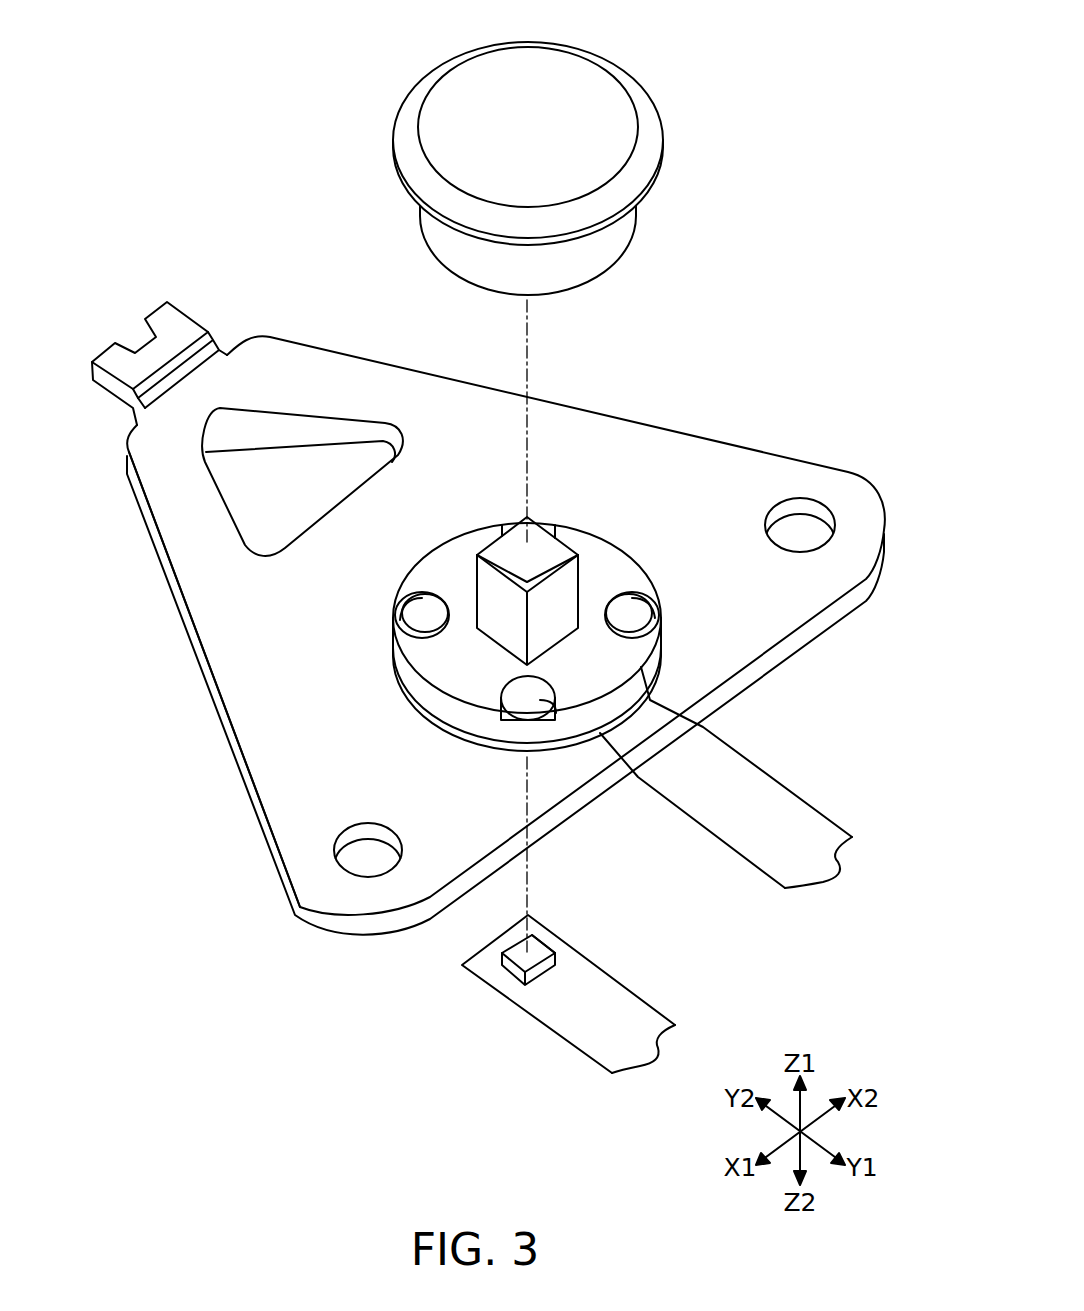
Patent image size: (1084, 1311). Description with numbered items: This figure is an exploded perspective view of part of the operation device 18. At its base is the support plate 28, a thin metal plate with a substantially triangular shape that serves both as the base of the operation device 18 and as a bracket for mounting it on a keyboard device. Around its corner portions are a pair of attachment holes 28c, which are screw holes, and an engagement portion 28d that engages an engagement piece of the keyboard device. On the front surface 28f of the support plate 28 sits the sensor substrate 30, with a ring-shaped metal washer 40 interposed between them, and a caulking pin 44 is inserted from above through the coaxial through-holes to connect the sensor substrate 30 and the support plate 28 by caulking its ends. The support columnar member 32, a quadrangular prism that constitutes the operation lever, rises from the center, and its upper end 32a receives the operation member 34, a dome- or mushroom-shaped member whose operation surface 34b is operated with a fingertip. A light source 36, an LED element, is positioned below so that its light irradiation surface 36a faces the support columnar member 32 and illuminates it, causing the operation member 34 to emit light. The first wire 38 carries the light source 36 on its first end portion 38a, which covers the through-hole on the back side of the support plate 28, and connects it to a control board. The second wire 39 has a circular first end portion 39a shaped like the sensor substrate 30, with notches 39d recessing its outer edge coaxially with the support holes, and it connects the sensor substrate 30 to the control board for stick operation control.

The operation device 18 is at (172, 34).
The support plate 28 is at (479, 597).
The attachment hole 28c is at (797, 527).
The engagement portion 28d is at (150, 358).
The front surface 28f is at (273, 747).
The sensor substrate 30 is at (503, 604).
The support columnar member 32 is at (627, 505).
The shaft tip 32a is at (580, 582).
The operation member 34 is at (476, 147).
The operation surface 34b is at (588, 102).
The light source 36 is at (519, 957).
The light irradiation surface 36a is at (505, 950).
The first wire 38 is at (584, 994).
The first end portion 38a is at (587, 1015).
The second wire 39 is at (797, 827).
The first end portion 39a is at (463, 547).
The notch 39d is at (420, 625).
The metal washer 40 is at (455, 732).
The caulking pin 44 is at (410, 616).